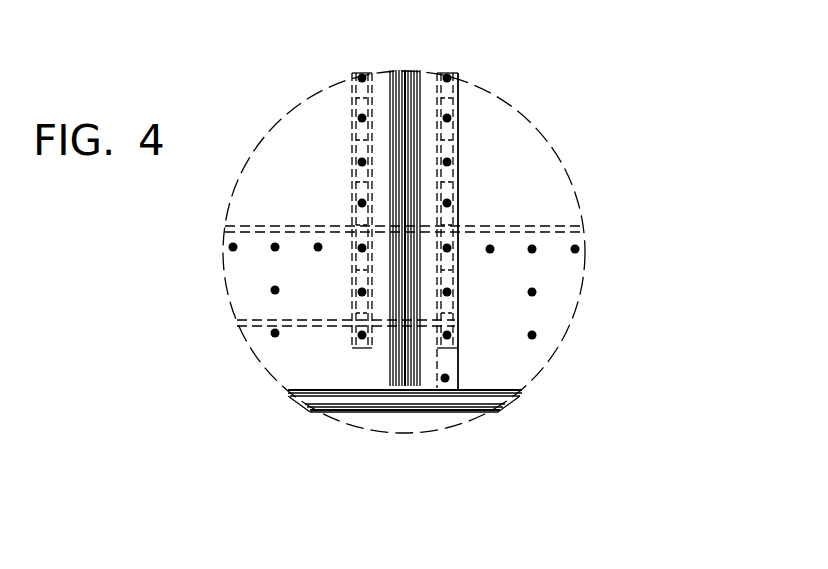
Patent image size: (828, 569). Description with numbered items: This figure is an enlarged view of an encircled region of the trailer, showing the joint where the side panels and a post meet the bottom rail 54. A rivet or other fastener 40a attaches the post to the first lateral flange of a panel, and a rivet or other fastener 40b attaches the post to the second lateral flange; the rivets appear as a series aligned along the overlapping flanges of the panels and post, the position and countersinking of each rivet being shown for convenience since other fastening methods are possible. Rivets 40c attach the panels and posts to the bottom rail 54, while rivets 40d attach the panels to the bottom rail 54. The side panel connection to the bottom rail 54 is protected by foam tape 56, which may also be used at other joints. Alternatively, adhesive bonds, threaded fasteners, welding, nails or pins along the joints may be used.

The fastener 40a is at (458, 195).
The fastener 40b is at (356, 196).
The rivets 40c is at (373, 255).
The rivets 40d is at (260, 252).
The bottom rail 54 is at (567, 265).
The foam tape 56 is at (310, 337).